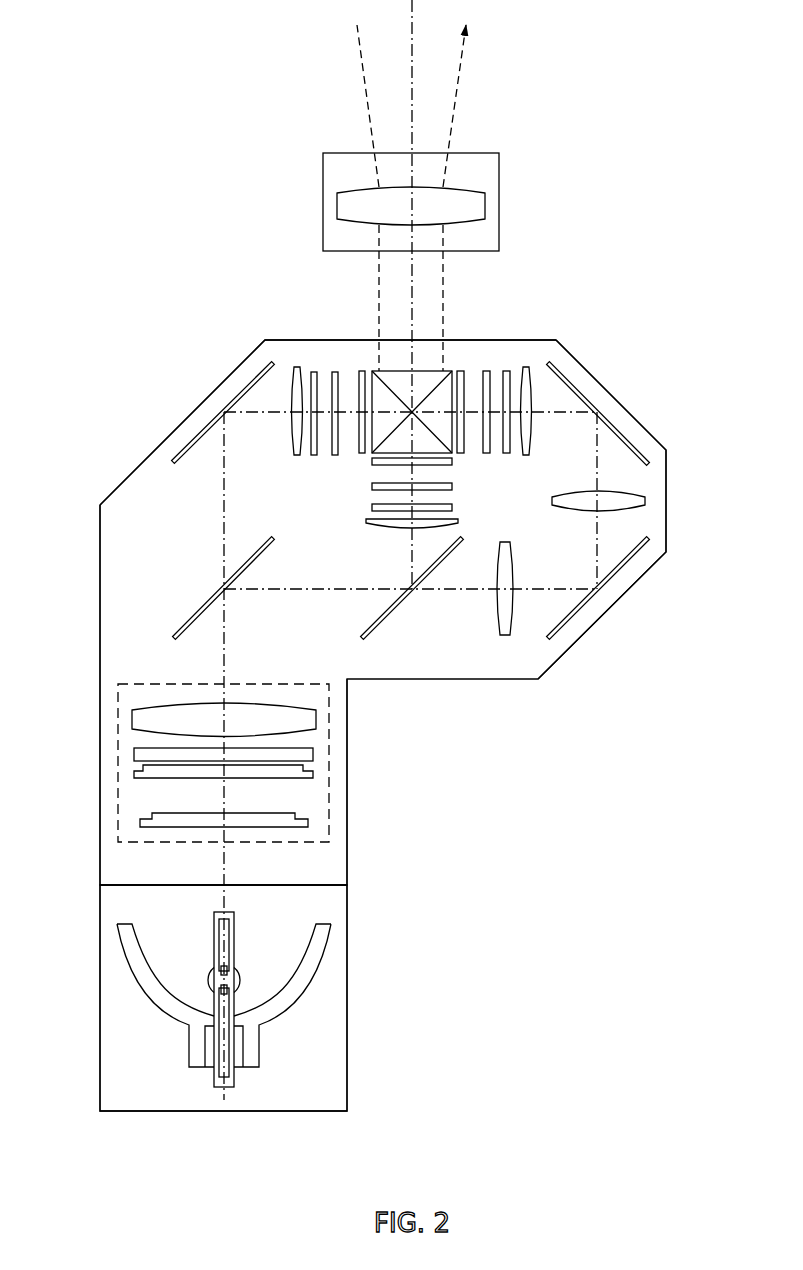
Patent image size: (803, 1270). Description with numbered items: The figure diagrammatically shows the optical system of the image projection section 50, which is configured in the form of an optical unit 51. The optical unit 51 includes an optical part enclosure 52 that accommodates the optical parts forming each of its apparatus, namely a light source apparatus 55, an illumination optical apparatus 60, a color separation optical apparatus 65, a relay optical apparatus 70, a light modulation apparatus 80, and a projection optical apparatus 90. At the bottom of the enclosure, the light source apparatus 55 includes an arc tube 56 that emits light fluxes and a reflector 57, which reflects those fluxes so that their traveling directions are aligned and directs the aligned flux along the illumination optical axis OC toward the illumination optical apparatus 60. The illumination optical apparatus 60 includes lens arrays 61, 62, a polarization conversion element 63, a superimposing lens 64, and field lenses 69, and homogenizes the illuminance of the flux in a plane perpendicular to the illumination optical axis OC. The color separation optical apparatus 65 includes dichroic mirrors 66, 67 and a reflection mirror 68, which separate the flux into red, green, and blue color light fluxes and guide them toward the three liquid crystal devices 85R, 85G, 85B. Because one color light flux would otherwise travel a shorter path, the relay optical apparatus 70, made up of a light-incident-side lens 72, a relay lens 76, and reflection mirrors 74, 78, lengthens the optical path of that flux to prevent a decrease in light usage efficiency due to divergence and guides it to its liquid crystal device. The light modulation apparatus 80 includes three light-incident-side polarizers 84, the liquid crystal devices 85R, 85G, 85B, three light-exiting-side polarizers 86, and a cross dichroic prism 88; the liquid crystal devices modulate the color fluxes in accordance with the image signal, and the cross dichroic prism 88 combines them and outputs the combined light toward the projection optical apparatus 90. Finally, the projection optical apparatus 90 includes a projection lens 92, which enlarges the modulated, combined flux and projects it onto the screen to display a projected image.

The image projection section 50 is at (130, 55).
The optical unit 51 is at (125, 340).
The optical part enclosure 52 is at (348, 757).
The light source apparatus 55 is at (358, 995).
The arc tube 56 is at (207, 978).
The reflector 57 is at (150, 990).
The illumination optical apparatus 60 is at (329, 800).
The lens array 61 is at (140, 822).
The lens array 62 is at (134, 774).
The polarization conversion element 63 is at (134, 755).
The superimposing lens 64 is at (133, 720).
The color separation optical apparatus 65 is at (135, 529).
The dichroic mirror 66 is at (200, 607).
The dichroic mirror 67 is at (375, 625).
The reflection mirror 68 is at (203, 431).
The field lens 69 is at (296, 437).
The relay optical apparatus 70 is at (655, 588).
The light-incident-side lens 72 is at (503, 628).
The reflection mirror 74 is at (572, 618).
The relay lens 76 is at (640, 500).
The reflection mirror 78 is at (622, 430).
The light modulation apparatus 80 is at (350, 357).
The light-incident-side polarizer 84 is at (314, 456).
The liquid crystal device 85R is at (335, 372).
The liquid crystal device 85G is at (372, 487).
The liquid crystal device 85B is at (487, 371).
The light-exiting-side polarizer 86 is at (462, 371).
The cross dichroic prism 88 is at (418, 380).
The projection optical apparatus 90 is at (293, 155).
The projection lens 92 is at (343, 195).
The illumination optical axis OC is at (224, 855).